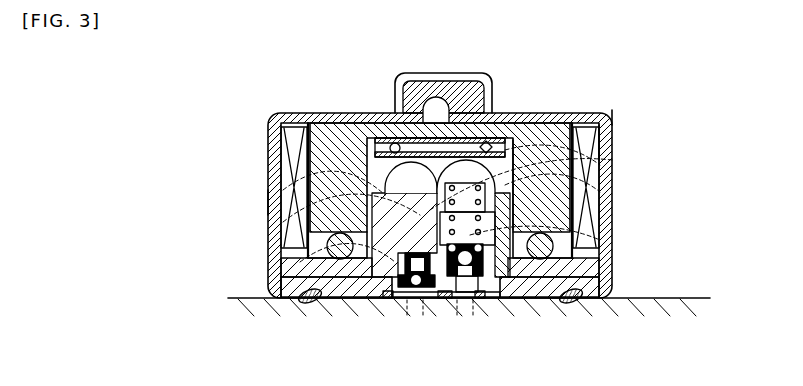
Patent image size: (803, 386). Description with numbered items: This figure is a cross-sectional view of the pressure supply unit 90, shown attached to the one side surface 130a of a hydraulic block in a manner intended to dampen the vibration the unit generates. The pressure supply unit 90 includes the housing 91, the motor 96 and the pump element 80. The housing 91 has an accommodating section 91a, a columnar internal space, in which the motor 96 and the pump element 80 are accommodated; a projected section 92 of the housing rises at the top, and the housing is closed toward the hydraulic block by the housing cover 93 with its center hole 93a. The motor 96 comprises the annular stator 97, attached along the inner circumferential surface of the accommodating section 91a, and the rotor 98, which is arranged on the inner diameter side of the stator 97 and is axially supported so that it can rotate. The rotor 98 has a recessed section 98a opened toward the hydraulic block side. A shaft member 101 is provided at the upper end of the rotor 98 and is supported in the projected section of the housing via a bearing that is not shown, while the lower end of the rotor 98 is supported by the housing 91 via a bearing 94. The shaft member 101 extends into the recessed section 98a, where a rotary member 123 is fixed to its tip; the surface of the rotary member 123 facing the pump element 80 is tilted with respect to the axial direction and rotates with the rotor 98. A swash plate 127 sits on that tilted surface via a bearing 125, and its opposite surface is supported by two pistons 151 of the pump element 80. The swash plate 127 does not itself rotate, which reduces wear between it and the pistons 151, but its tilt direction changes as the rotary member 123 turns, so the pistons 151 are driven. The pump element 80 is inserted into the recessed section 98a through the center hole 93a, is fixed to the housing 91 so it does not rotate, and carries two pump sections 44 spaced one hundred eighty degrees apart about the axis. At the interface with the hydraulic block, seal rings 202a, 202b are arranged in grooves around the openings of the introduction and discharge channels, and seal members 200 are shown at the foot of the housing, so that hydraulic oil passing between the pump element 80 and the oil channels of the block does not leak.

The pressure supply unit 90 is at (621, 114).
The housing 91 is at (302, 113).
The accommodating section 91a is at (279, 204).
The cap 92 is at (481, 87).
The housing cover 93 is at (585, 268).
The center hole 93a is at (292, 266).
The bearing 94 is at (328, 244).
The motor 96 is at (282, 160).
The stator 97 is at (272, 133).
The rotor 98 is at (360, 132).
The recessed section 98a is at (374, 168).
The shaft member 101 is at (420, 118).
The rotary member 123 is at (470, 140).
The bearing 125 is at (505, 150).
The swash plate 127 is at (603, 140).
The pistons 151 is at (300, 186).
The pump element 80 is at (514, 190).
The pump sections 44 is at (495, 212).
The seal member 200 is at (298, 296).
The seal ring 202a is at (390, 300).
The seal ring 202b is at (448, 300).
The one side surface 130a is at (650, 298).